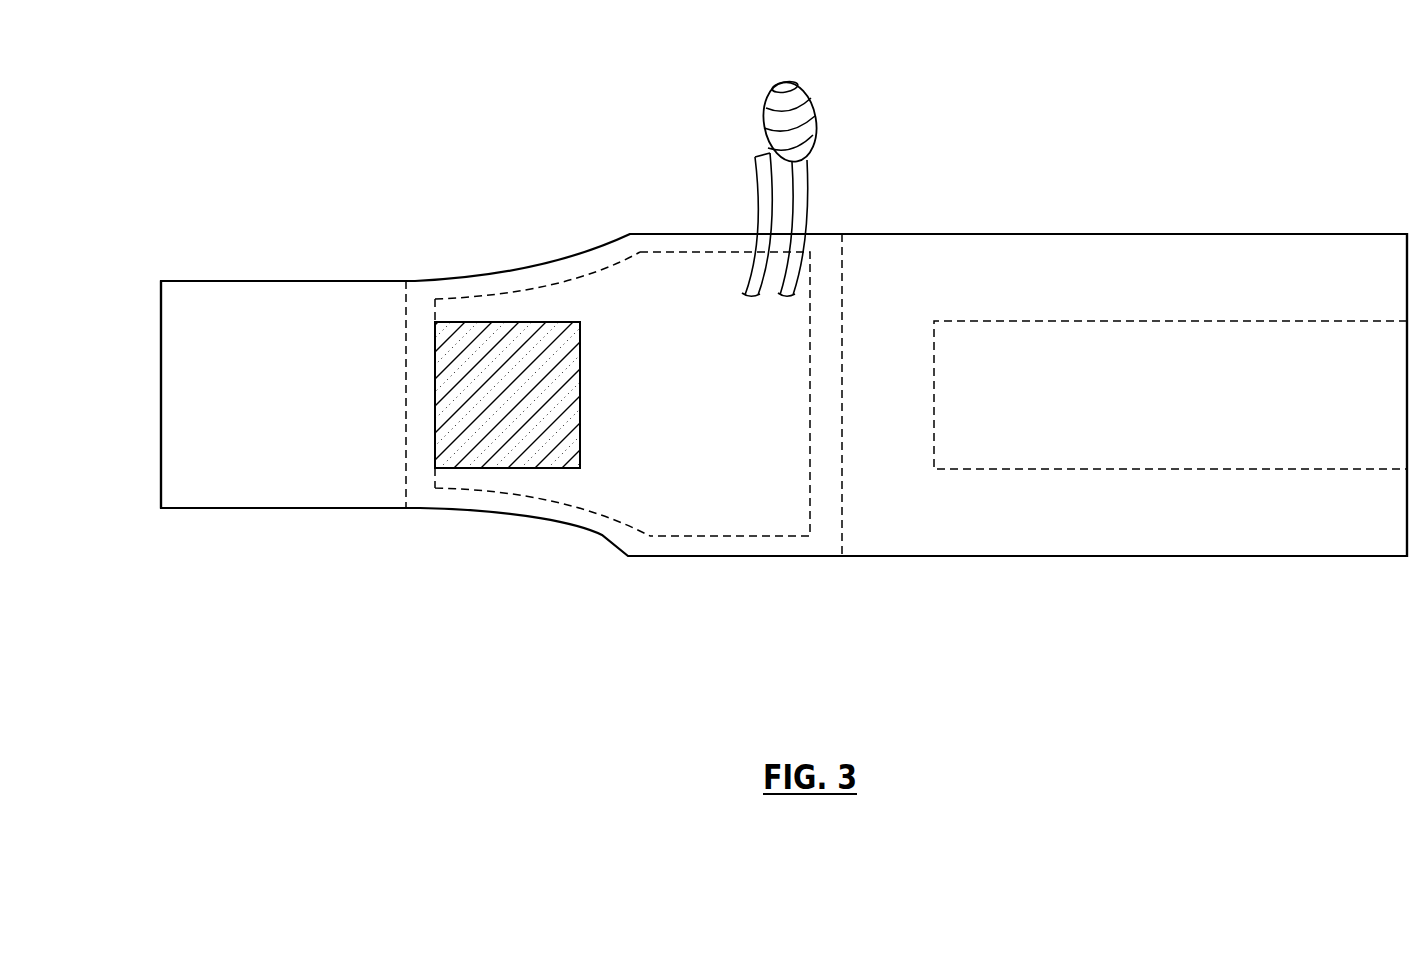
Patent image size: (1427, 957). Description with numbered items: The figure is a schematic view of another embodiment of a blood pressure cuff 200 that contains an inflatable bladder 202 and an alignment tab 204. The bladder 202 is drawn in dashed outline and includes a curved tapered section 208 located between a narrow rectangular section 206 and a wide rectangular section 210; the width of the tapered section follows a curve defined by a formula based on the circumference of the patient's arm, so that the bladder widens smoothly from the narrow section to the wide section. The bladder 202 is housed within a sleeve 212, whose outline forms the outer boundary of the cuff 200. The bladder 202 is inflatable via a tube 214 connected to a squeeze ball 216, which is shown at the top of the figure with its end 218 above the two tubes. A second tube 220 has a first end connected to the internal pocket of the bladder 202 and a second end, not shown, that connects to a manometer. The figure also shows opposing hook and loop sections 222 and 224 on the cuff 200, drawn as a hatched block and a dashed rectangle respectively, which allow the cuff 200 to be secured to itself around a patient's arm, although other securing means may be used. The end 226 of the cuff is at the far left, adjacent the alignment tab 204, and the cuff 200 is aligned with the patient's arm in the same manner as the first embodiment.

The blood pressure cuff 200 is at (330, 222).
The inflatable bladder 202 is at (697, 502).
The alignment tab 204 is at (266, 489).
The narrow rectangular section 206 is at (468, 478).
The curved tapered section 208 is at (623, 502).
The wide rectangular section 210 is at (760, 510).
The sleeve 212 is at (821, 532).
The tube 214 is at (808, 192).
The squeeze ball 216 is at (814, 102).
The knot cap 218 is at (786, 82).
The second tube 220 is at (755, 205).
The hook and loop section 222 is at (520, 446).
The hook and loop section 224 is at (1138, 433).
The proximal end 226 is at (160, 300).